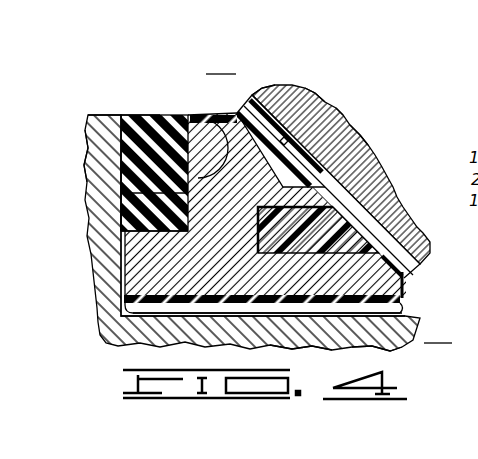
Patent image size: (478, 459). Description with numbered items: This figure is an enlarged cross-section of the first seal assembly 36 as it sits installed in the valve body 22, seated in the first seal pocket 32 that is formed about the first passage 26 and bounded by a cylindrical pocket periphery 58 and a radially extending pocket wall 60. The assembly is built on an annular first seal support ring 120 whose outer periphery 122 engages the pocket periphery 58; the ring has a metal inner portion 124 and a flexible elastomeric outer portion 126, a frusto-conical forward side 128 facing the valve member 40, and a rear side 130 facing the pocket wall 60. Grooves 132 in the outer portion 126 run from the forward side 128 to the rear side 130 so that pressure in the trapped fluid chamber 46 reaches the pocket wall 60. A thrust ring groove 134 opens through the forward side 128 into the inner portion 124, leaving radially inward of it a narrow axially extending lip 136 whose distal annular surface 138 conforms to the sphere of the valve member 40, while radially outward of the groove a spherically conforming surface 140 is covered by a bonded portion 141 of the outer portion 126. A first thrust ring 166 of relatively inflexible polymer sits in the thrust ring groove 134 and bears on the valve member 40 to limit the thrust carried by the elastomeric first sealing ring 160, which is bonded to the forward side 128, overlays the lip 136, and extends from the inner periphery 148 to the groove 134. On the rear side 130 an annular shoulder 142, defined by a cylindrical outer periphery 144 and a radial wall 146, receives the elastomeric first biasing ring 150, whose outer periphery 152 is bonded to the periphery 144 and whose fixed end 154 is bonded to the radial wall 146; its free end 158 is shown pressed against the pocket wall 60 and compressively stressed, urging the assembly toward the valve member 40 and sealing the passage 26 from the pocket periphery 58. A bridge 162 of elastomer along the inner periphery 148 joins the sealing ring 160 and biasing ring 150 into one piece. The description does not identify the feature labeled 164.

The body 22 is at (103, 231).
The first passage 26 is at (221, 65).
The first seal pocket 32 is at (90, 165).
The first seal assembly 36 is at (238, 83).
The valve member 40 is at (363, 135).
The trapped fluid chamber 46 is at (438, 333).
The pocket periphery 58 is at (152, 312).
The pocket wall 60 is at (138, 115).
The first seal support ring 120 is at (210, 272).
The outer periphery 122 is at (300, 353).
The inner portion 124 is at (303, 88).
The outer portion 126 is at (387, 310).
The forward side 128 is at (350, 160).
The rear side 130 is at (121, 262).
The grooves 132 is at (367, 350).
The thrust ring groove 134 is at (376, 225).
The annular lip 136 is at (332, 187).
The annular surface 138 is at (340, 167).
The surface 140 is at (410, 258).
The portion 141 is at (405, 283).
The annular shoulder 142 is at (180, 243).
The outer periphery 144 is at (121, 193).
The radial wall 146 is at (108, 182).
The inner periphery 148 is at (202, 113).
The first biasing ring 150 is at (165, 112).
The outer periphery 152 is at (110, 214).
The fixed end 154 is at (247, 102).
The free end 158 is at (90, 115).
The first sealing ring 160 is at (328, 105).
The bridge 162 is at (218, 113).
The shoulder 164 is at (340, 127).
The first thrust ring 166 is at (358, 242).